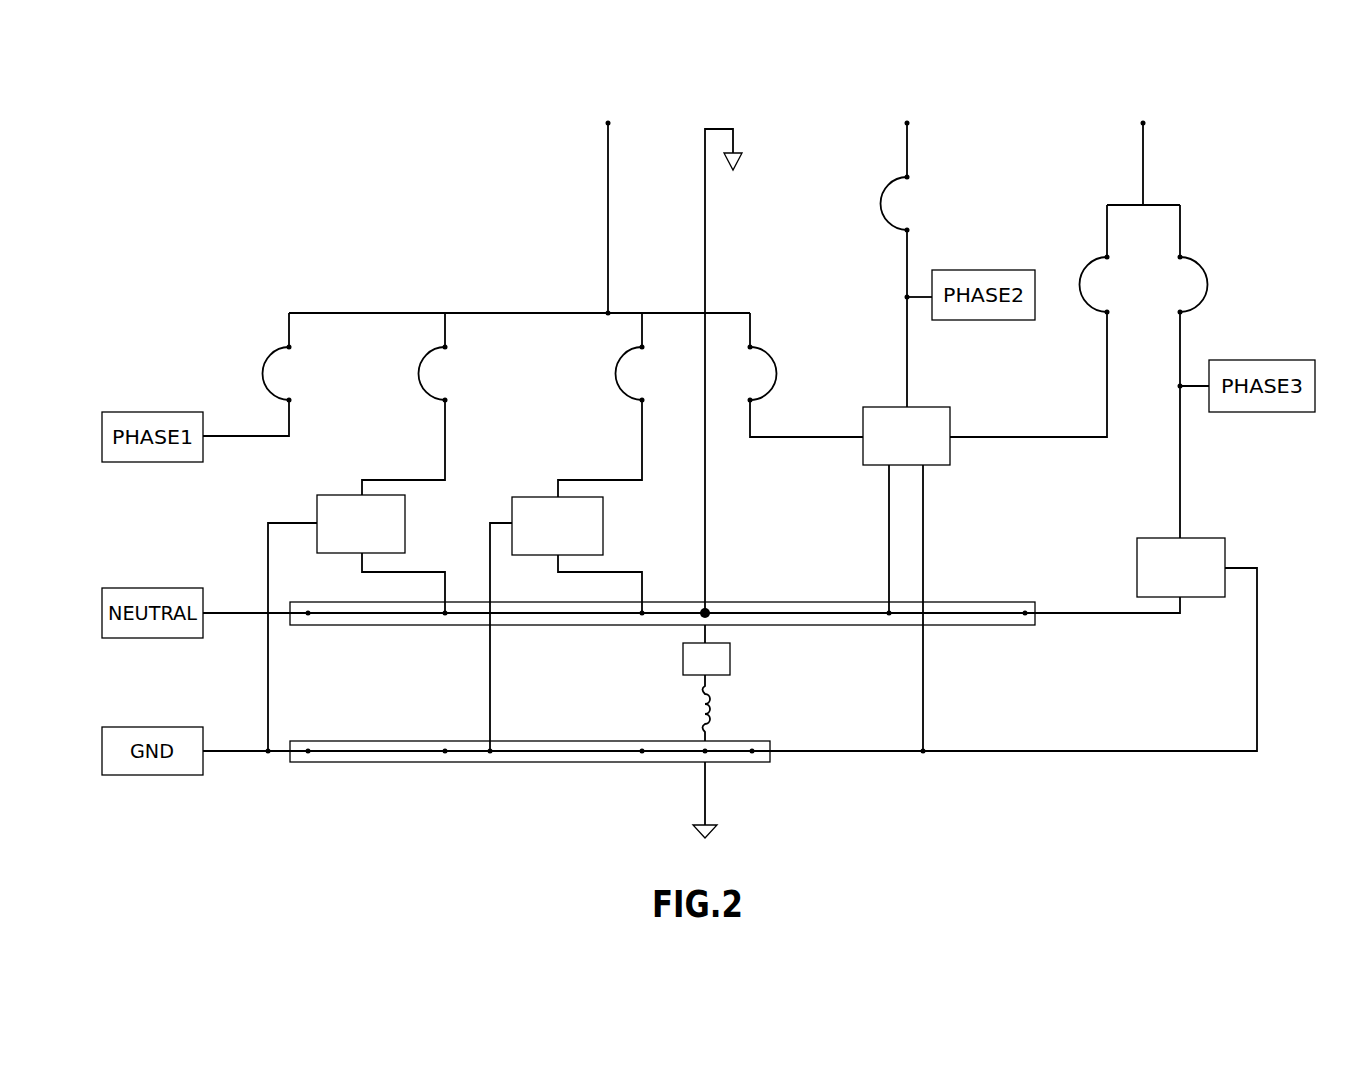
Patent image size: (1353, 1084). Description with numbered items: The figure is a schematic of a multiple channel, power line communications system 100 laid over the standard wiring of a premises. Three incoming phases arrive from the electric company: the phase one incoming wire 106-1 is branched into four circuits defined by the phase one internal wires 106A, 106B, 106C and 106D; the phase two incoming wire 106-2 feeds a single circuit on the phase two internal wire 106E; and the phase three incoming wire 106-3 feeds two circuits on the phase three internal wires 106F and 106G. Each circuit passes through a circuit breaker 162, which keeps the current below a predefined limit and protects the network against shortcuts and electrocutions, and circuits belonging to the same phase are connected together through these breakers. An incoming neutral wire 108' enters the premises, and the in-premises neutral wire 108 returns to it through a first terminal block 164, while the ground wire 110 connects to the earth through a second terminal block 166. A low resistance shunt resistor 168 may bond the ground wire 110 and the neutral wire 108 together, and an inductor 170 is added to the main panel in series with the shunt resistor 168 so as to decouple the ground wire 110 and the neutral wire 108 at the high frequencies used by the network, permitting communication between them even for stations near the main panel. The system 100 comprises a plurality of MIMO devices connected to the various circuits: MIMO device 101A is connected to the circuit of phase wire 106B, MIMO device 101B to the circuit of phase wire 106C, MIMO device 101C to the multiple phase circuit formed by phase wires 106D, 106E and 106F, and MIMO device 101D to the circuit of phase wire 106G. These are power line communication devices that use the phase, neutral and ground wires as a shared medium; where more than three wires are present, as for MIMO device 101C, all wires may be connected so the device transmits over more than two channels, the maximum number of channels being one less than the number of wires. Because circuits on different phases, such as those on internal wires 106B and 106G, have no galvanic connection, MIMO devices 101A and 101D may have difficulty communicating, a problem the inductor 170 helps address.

The multiple channel power line communications system 100 is at (335, 190).
The phase 1 incoming wire 106-1 is at (607, 154).
The phase 2 incoming wire 106-2 is at (910, 140).
The phase 3 incoming wire 106-3 is at (1140, 170).
The incoming neutral wire 108' is at (752, 371).
The neutral wire 108 is at (1107, 632).
The ground wire 110 is at (805, 753).
The circuit breaker 162 is at (443, 348).
The first terminal block 164 is at (731, 593).
The second terminal block 166 is at (632, 764).
The shunt resistor 168 is at (732, 661).
The inductor 170 is at (711, 710).
The MIMO device 101A is at (337, 493).
The MIMO device 101B is at (540, 495).
The MIMO device 101C is at (936, 406).
The MIMO device 101D is at (1195, 538).
The phase 1 internal wire 106A is at (238, 437).
The phase 1 internal wire 106B is at (444, 415).
The phase 1 internal wire 106C is at (638, 410).
The phase 1 internal wire 106D is at (763, 438).
The phase 2 internal wire 106E is at (905, 275).
The phase 3 internal wire 106F is at (1105, 338).
The phase 3 internal wire 106G is at (1180, 337).